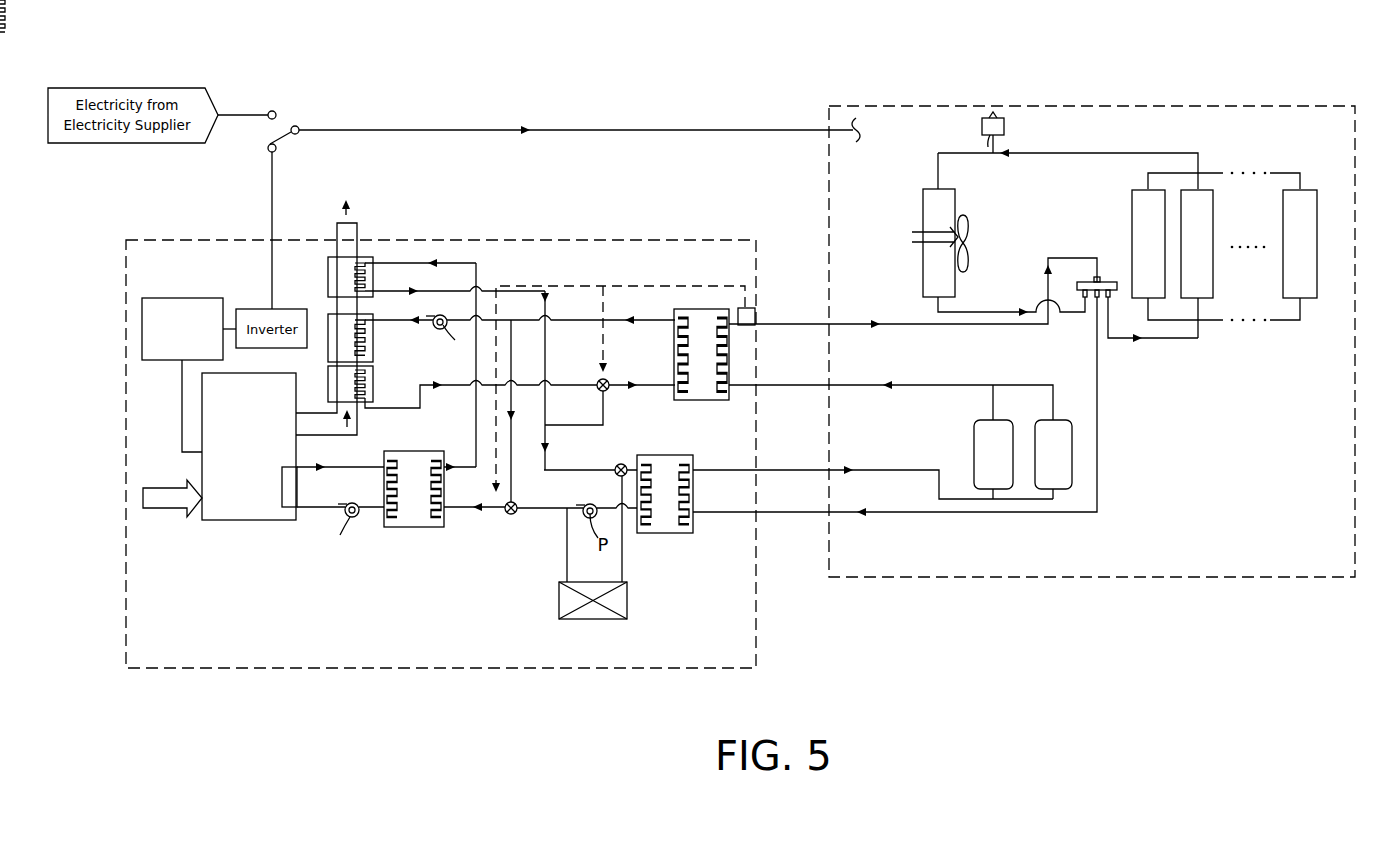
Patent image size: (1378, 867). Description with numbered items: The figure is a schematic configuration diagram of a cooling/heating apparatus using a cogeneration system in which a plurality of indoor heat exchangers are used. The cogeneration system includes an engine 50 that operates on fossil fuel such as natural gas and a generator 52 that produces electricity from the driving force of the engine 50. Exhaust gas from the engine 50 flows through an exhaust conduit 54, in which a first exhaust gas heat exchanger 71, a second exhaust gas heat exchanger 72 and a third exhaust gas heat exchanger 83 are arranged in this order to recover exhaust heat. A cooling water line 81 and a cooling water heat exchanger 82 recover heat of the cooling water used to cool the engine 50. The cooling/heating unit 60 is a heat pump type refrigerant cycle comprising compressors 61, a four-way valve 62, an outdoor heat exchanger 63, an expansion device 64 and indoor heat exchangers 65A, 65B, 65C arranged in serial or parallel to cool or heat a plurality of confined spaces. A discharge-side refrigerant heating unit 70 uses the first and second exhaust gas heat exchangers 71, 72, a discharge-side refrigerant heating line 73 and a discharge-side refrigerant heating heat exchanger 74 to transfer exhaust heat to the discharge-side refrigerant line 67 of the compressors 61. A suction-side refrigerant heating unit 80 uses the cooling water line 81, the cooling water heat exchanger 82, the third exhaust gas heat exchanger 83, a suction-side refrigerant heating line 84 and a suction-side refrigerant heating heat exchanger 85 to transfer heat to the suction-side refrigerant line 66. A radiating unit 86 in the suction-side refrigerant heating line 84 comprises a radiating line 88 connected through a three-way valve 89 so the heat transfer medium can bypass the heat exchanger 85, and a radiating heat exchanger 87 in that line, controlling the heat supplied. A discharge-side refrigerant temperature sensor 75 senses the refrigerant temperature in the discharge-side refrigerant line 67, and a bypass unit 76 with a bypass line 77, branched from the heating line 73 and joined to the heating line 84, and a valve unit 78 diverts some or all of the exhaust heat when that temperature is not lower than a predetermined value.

The engine 50 is at (234, 508).
The generator 52 is at (198, 298).
The exhaust conduit 54 is at (345, 305).
The cooling/heating unit 60 is at (982, 98).
The compressor 61 is at (997, 483).
The 4-way valve 62 is at (1110, 295).
The outdoor heat exchanger 63 is at (932, 200).
The expansion device 64 is at (1005, 125).
The indoor heat exchanger 65A is at (1155, 285).
The indoor heat exchanger 65B is at (1203, 285).
The indoor heat exchanger 65C is at (1305, 285).
The suction-side refrigerant line 66 is at (873, 515).
The discharge-side refrigerant line 67 is at (862, 318).
The discharge-side refrigerant heating unit 70 is at (593, 320).
The first exhaust gas heat exchanger 71 is at (373, 378).
The second exhaust gas heat exchanger 72 is at (365, 338).
The discharge-side refrigerant heating line 73 is at (390, 320).
The discharge-side refrigerant heating heat exchanger 74 is at (705, 400).
The discharge-side refrigerant temperature sensor 75 is at (750, 310).
The bypass unit 76 is at (346, 266).
The bypass line 77 is at (643, 428).
The valve unit 78 is at (612, 390).
The suction-side refrigerant heating unit 80 is at (494, 527).
The cooling water line 81 is at (322, 512).
The cooling water heat exchanger 82 is at (413, 527).
The third exhaust gas heat exchanger 83 is at (368, 258).
The suction-side refrigerant heating line 84 is at (508, 286).
The suction-side refrigerant heating heat exchanger 85 is at (680, 530).
The radiating unit 86 is at (636, 559).
The radiating heat exchanger 87 is at (608, 612).
The radiating line 88 is at (622, 552).
The 3-way valve 89 is at (615, 475).